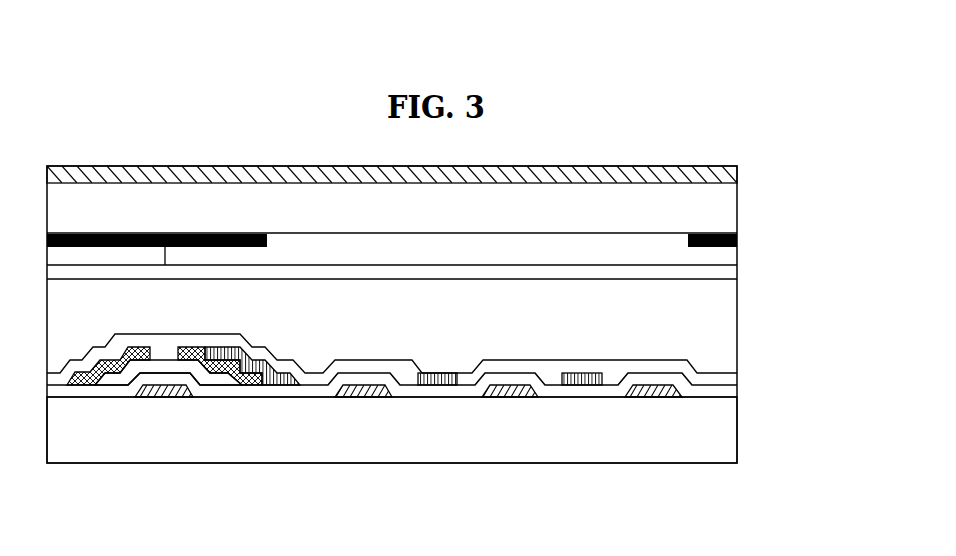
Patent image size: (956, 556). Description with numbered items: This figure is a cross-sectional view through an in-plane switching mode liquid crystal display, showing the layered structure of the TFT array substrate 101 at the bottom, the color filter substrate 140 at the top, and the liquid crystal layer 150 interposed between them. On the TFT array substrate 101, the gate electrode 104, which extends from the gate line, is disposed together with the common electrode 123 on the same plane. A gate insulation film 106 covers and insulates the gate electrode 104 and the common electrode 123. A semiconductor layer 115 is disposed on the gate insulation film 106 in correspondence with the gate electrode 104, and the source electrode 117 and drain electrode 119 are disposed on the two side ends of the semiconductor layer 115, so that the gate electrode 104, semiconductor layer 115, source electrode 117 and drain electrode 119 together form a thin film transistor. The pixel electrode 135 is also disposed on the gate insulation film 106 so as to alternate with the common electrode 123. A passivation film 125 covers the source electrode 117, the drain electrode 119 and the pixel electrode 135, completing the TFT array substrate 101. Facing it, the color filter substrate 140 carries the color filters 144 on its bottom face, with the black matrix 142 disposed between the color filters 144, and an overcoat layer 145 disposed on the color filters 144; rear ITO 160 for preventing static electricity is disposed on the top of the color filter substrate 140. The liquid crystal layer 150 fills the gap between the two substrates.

The TFT array substrate 101 is at (728, 427).
The gate electrode 104 is at (157, 394).
The gate insulation film 106 is at (728, 392).
The semiconductor layer 115 is at (120, 378).
The source electrode 117 is at (81, 380).
The drain electrode 119 is at (239, 383).
The common electrode 123 is at (363, 398).
The passivation film 125 is at (728, 378).
The pixel electrode 135 is at (281, 375).
The color filter substrate 140 is at (728, 205).
The black matrix 142 is at (737, 240).
The color filters 144 is at (728, 254).
The overcoat layer 145 is at (728, 278).
The liquid crystal layer 150 is at (728, 328).
The rear ITO 160 is at (728, 175).